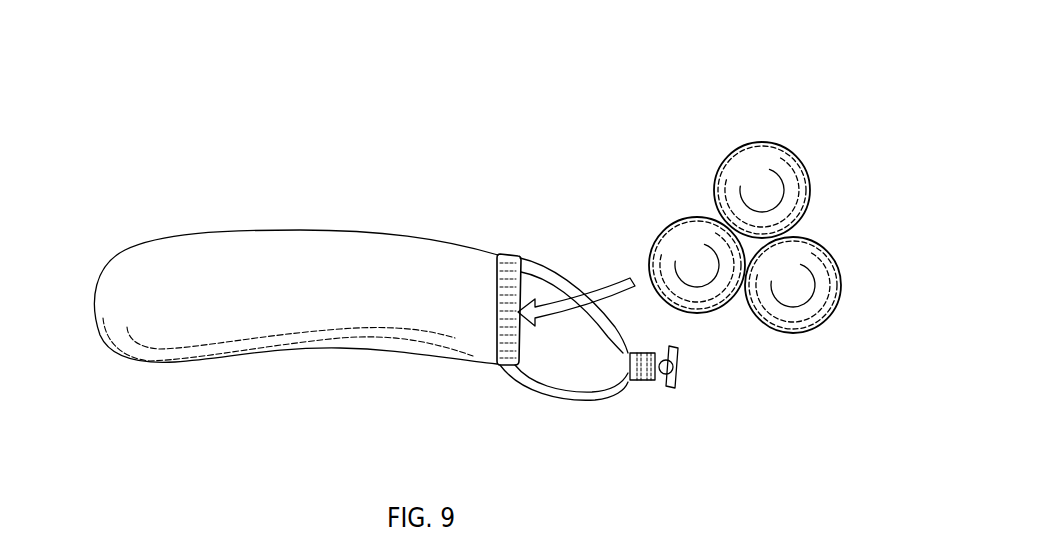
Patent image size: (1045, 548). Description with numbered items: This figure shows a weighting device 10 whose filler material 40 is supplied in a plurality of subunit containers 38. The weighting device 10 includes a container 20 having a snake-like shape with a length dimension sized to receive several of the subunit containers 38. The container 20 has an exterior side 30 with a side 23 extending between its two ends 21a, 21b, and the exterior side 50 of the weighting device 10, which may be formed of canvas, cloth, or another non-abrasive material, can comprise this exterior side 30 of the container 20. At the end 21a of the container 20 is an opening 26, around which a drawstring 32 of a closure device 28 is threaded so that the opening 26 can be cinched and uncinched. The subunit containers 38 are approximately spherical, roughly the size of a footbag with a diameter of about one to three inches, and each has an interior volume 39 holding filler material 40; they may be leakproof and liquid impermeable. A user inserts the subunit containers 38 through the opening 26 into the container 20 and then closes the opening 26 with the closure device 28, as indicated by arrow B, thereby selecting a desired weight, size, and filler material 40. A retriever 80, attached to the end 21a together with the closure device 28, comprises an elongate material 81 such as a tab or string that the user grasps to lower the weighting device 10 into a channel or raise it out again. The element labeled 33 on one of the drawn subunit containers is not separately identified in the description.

The weighting device 10 is at (232, 90).
The container 20 is at (343, 232).
The end 21a is at (508, 241).
The end 21b is at (118, 364).
The side 23 is at (362, 308).
The opening 26 is at (517, 358).
The closure device 28 is at (579, 405).
The exterior side 30 is at (280, 258).
The drawstring 32 is at (535, 398).
The ring 33 is at (681, 213).
The subunit containers 38 is at (830, 249).
The interior volume 39 is at (841, 284).
The filler material 40 is at (838, 256).
The exterior side 50 is at (188, 320).
The retriever 80 is at (635, 396).
The elongate material 81 is at (632, 352).
The arrow B is at (606, 291).